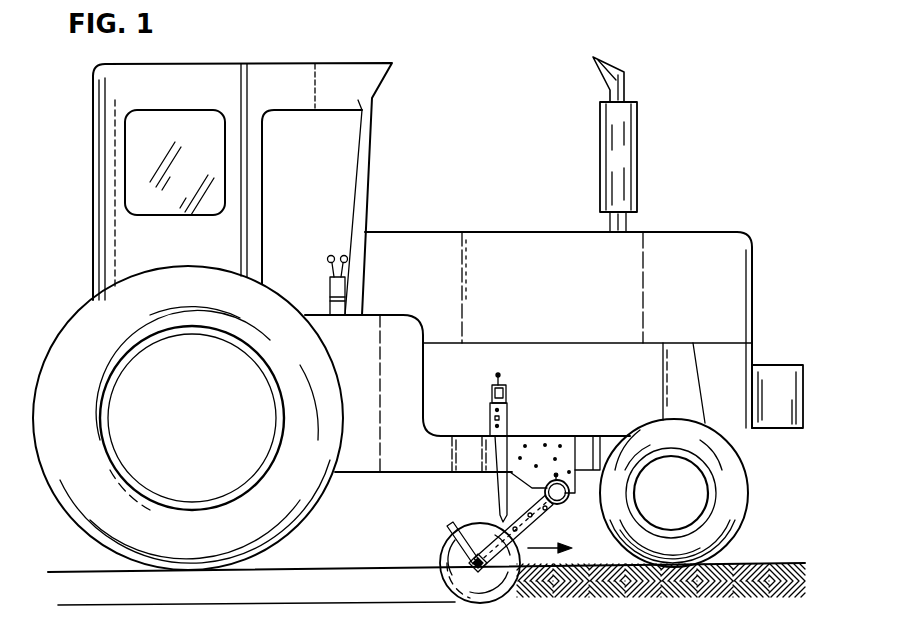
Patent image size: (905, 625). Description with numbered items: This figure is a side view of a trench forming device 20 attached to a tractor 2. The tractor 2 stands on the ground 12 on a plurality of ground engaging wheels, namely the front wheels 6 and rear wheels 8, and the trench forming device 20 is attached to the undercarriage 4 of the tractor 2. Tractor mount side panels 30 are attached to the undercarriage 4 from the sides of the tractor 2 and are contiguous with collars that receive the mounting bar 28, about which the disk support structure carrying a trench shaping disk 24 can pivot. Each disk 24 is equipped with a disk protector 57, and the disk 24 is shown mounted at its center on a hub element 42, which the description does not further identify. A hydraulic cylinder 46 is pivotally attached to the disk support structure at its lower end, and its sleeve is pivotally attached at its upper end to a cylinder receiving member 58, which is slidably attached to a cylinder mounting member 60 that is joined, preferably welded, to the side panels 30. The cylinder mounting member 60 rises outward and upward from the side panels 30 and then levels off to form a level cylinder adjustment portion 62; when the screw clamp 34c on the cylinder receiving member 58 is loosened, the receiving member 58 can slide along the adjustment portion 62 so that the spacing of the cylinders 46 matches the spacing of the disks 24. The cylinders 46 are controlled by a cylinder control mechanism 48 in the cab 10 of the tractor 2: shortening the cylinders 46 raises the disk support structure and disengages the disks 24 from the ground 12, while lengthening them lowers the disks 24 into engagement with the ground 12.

The tractor 2 is at (222, 63).
The undercarriage 4 is at (428, 454).
The front wheels 6 is at (722, 481).
The rear wheels 8 is at (78, 330).
The cab 10 is at (394, 116).
The ground 12 is at (760, 594).
The trench forming device 20 is at (548, 524).
The trench shaping disk 24 is at (466, 585).
The mounting bar 28 is at (568, 482).
The tractor mount side panels 30 is at (544, 448).
The screw clamp 34c is at (500, 379).
The disc hub 42 is at (484, 568).
The hydraulic cylinder 46 is at (487, 484).
The cylinder control mechanism 48 is at (343, 287).
The disk protector 57 is at (449, 526).
The cylinder receiving member 58 is at (489, 419).
The cylinder mounting member 60 is at (507, 394).
The cylinder adjustment portion 62 is at (490, 397).